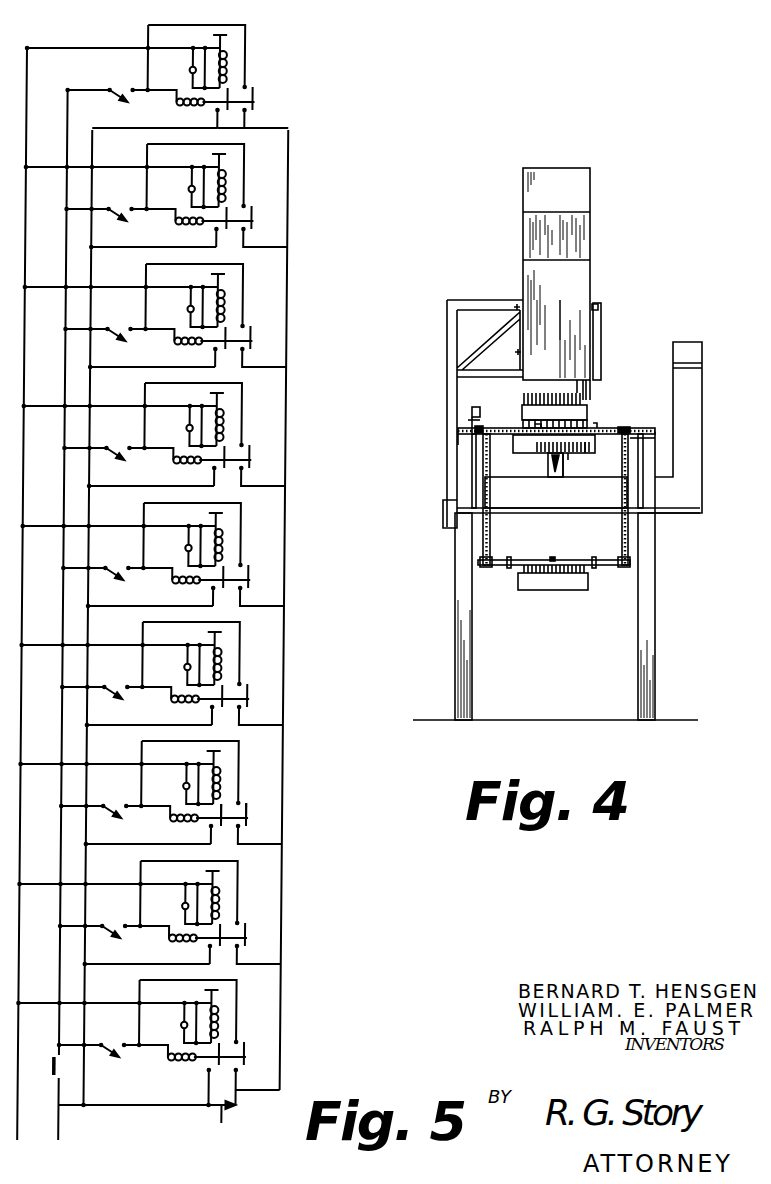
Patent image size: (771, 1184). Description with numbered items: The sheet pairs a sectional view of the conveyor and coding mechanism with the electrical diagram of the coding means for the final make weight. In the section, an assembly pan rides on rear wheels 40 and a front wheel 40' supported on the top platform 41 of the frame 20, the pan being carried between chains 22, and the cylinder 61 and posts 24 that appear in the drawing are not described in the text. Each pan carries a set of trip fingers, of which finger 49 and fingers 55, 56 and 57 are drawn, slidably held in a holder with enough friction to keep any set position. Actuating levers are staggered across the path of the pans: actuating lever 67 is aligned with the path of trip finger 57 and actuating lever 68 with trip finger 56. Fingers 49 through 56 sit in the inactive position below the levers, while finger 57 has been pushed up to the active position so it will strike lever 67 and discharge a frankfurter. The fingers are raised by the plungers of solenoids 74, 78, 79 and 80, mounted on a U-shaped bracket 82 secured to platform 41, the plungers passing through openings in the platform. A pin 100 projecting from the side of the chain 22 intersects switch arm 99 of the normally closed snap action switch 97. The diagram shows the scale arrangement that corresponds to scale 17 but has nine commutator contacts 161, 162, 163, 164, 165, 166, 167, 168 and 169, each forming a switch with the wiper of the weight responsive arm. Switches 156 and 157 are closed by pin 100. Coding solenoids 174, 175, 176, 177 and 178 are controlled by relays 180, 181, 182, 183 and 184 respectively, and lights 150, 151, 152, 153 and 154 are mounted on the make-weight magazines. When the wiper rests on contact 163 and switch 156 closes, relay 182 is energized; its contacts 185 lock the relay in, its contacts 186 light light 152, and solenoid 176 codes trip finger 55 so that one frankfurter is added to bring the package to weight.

In FIG. 4, the scale 17 is at (704, 428).
In FIG. 4, the frame 20 is at (475, 645).
In FIG. 4, the chains 22 is at (483, 428).
In FIG. 4, the guide posts 24 is at (492, 540).
In FIG. 4, the rear wheels 40 is at (556, 414).
In FIG. 4, the front wheel 40' is at (554, 560).
In FIG. 4, the top platform 41 is at (633, 438).
In FIG. 4, the trip finger 49 is at (523, 393).
In FIG. 4, the trip finger 55 is at (577, 393).
In FIG. 4, the trip finger 56 is at (590, 400).
In FIG. 4, the trip finger 57 is at (590, 401).
In FIG. 4, the cylinder 61 is at (565, 287).
In FIG. 4, the actuating lever 67 is at (587, 398).
In FIG. 4, the actuating lever 68 is at (563, 380).
In FIG. 4, the solenoid 74 is at (540, 452).
In FIG. 4, the solenoid 78 is at (557, 462).
In FIG. 4, the solenoid 79 is at (575, 462).
In FIG. 4, the solenoid 80 is at (582, 455).
In FIG. 4, the U-shaped bracket 82 is at (592, 452).
In FIG. 4, the snap action switch 97 is at (472, 408).
In FIG. 4, the switch arm 99 is at (470, 418).
In FIG. 4, the pin 100 is at (472, 435).
In FIG. 5, the light 150 is at (165, 1017).
In FIG. 5, the light 151 is at (166, 898).
In FIG. 5, the light 152 is at (167, 778).
In FIG. 5, the light 153 is at (173, 181).
In FIG. 5, the light 154 is at (190, 47).
In FIG. 5, the switch 156 is at (59, 1069).
In FIG. 5, the switch 157 is at (224, 1124).
In FIG. 5, the commutator contact 161 is at (115, 1029).
In FIG. 5, the commutator contact 162 is at (116, 910).
In FIG. 5, the commutator contact 163 is at (117, 790).
In FIG. 5, the commutator contact 164 is at (118, 671).
In FIG. 5, the commutator contact 165 is at (119, 552).
In FIG. 5, the commutator contact 166 is at (120, 432).
In FIG. 5, the commutator contact 167 is at (121, 313).
In FIG. 5, the commutator contact 168 is at (123, 193).
In FIG. 5, the commutator contact 169 is at (133, 65).
In FIG. 5, the coding solenoid 174 is at (246, 1019).
In FIG. 5, the coding solenoid 175 is at (247, 900).
In FIG. 5, the coding solenoid 176 is at (248, 780).
In FIG. 5, the coding solenoid 177 is at (254, 183).
In FIG. 5, the coding solenoid 178 is at (228, 40).
In FIG. 5, the relay 180 is at (176, 1074).
In FIG. 5, the relay 181 is at (169, 949).
In FIG. 5, the relay 182 is at (170, 829).
In FIG. 5, the relay 183 is at (175, 232).
In FIG. 5, the relay 184 is at (194, 80).
In FIG. 5, the relay contacts 185 is at (247, 836).
In FIG. 5, the relay contacts 186 is at (229, 832).